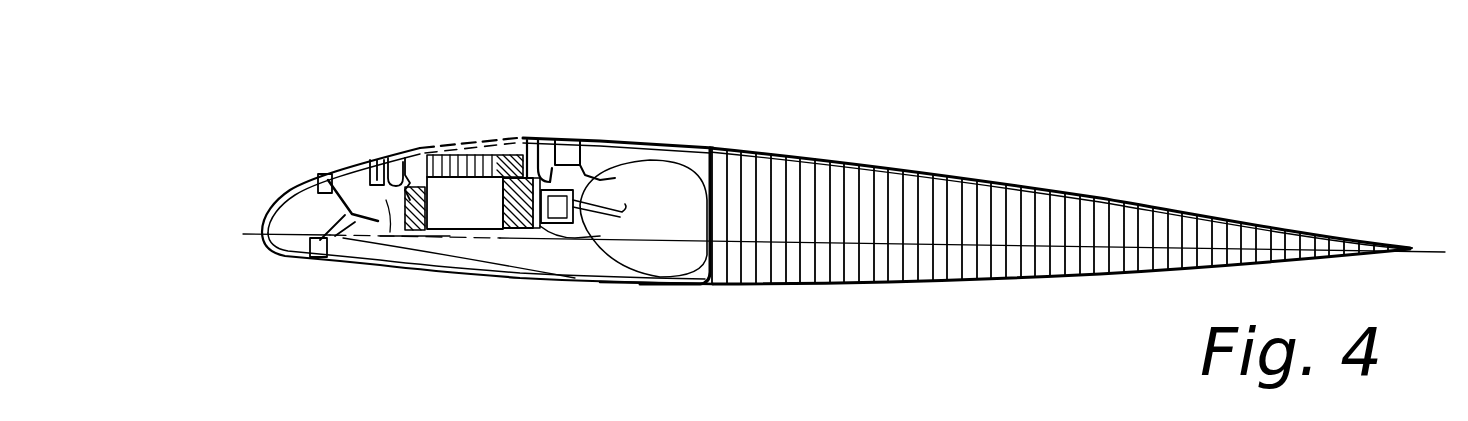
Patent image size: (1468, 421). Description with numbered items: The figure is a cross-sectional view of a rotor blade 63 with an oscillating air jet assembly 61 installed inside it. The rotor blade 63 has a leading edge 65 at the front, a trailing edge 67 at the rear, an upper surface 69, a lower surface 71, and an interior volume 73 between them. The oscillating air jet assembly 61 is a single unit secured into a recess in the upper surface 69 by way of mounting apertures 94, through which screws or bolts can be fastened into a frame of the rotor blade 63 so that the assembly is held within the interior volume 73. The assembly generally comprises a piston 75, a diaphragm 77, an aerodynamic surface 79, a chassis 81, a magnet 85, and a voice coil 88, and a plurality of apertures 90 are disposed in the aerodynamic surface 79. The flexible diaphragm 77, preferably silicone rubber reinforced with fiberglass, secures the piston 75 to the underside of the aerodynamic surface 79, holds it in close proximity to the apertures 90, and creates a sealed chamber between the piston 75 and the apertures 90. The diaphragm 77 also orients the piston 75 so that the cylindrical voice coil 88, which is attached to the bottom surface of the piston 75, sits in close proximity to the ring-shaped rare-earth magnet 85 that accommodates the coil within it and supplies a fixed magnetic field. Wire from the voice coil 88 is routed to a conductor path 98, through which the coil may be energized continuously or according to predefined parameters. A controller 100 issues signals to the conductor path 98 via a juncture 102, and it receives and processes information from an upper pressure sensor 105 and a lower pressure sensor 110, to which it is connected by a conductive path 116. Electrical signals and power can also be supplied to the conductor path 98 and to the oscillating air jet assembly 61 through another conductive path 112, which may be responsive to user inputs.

The oscillating air jet assembly 61 is at (560, 132).
The rotor blade 63 is at (1080, 193).
The leading edge 65 is at (257, 222).
The trailing edge 67 is at (1407, 248).
The upper surface 69 is at (377, 160).
The lower surface 71 is at (1150, 276).
The interior volume 73 is at (698, 234).
The piston 75 is at (413, 150).
The diaphragm 77 is at (390, 153).
The aerodynamic surface 79 is at (540, 138).
The chassis 81 is at (542, 243).
The magnet 85 is at (517, 237).
The voice coil 88 is at (450, 240).
The apertures 90 is at (517, 135).
The mounting apertures 94 is at (337, 172).
The conductor path 98 is at (715, 150).
The controller 100 is at (603, 237).
The juncture 102 is at (617, 230).
The upper pressure sensor 105 is at (318, 173).
The lower pressure sensor 110 is at (313, 253).
The other conductive path 112 is at (703, 285).
The conductive path 116 is at (373, 240).